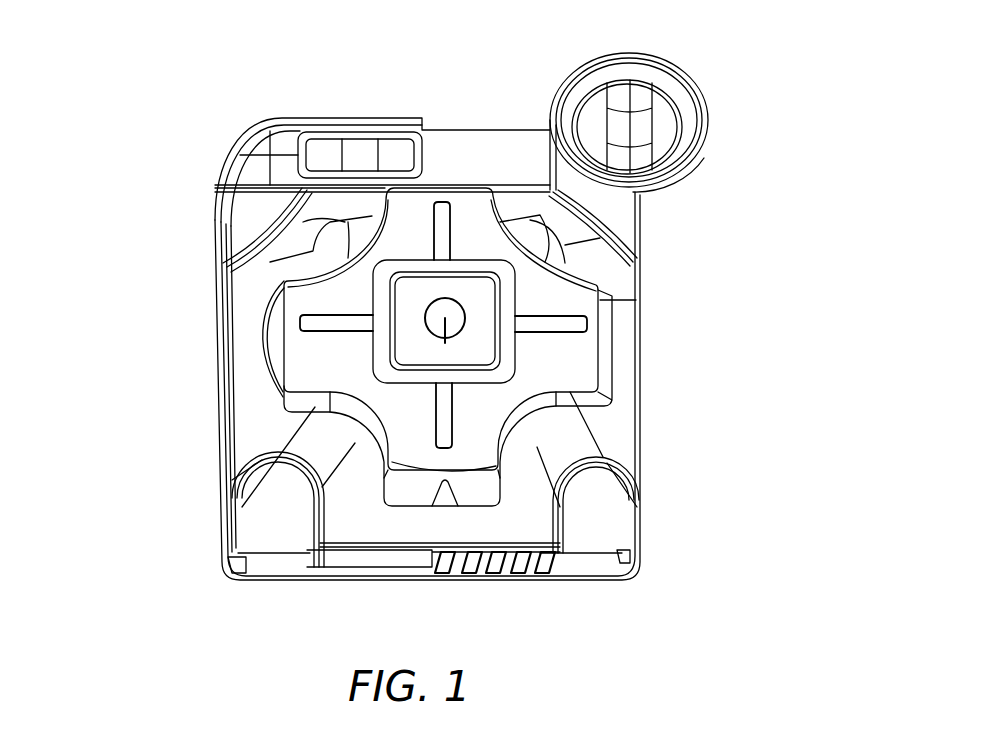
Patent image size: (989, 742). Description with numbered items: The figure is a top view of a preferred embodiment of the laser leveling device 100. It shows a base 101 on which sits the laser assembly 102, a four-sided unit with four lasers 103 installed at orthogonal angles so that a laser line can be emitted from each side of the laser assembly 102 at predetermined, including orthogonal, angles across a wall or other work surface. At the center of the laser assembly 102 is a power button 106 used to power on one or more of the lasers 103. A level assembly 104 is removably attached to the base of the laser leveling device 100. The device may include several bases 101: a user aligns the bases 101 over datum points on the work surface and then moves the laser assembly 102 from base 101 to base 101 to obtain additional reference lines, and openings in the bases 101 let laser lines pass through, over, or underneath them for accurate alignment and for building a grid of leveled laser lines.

The laser leveling device 100 is at (720, 81).
The base 101 is at (633, 552).
The laser assembly 102 is at (253, 284).
The lasers 103 is at (440, 178).
The level assembly 104 is at (690, 173).
The power button 106 is at (480, 343).